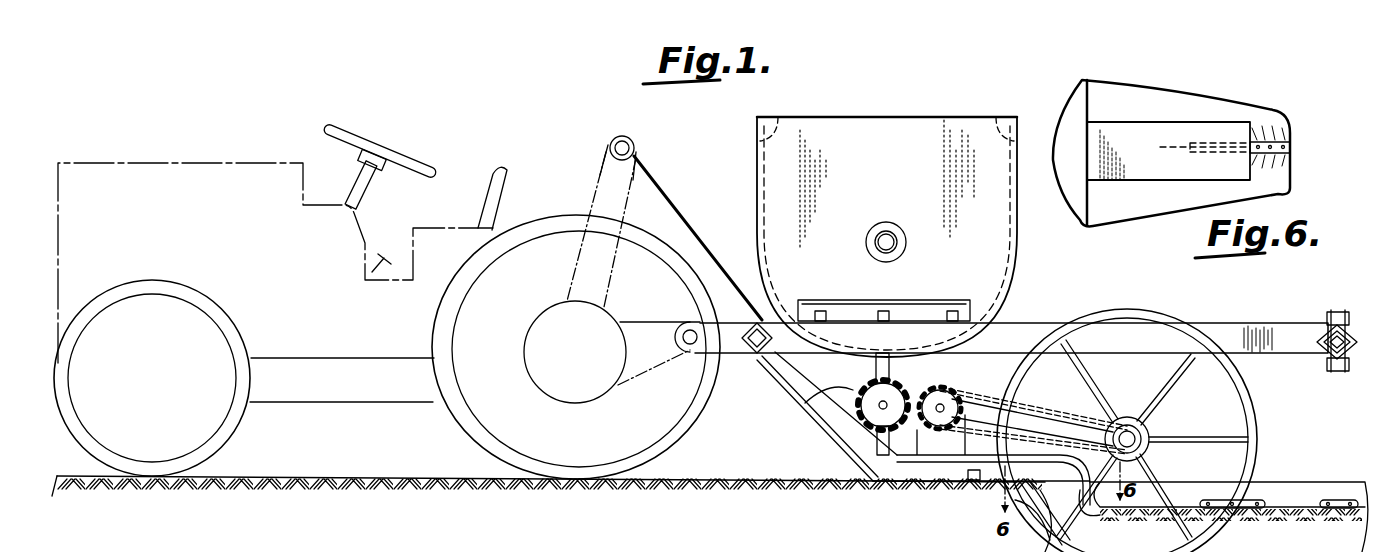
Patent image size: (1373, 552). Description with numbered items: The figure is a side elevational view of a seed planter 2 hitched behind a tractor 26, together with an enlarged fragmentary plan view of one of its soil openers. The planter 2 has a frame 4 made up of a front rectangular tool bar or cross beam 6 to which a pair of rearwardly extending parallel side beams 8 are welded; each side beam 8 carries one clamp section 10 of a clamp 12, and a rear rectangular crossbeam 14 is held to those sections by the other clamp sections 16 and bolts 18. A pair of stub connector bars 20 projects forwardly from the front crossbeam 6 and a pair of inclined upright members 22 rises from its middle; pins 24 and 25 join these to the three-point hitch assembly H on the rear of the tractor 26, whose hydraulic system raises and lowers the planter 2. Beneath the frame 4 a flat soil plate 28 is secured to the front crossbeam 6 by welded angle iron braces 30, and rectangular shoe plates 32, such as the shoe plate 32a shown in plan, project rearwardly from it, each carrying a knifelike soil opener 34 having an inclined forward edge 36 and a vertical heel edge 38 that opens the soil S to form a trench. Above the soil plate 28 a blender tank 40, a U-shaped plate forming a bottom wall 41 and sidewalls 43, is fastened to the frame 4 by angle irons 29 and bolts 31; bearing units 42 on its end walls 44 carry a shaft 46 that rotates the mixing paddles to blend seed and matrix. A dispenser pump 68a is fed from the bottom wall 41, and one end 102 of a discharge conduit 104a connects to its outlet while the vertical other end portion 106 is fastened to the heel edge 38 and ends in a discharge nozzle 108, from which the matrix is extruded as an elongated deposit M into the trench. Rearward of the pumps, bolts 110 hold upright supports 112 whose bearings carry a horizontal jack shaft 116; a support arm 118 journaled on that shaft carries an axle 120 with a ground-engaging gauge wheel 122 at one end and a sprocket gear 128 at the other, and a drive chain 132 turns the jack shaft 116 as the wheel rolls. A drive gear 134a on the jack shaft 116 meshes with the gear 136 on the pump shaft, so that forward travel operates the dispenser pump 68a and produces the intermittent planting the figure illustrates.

In FIG. 1, the seed planter 2 is at (1012, 310).
In FIG. 1, the frame 4 is at (1218, 322).
In FIG. 1, the front rectangular tool bar or cross beam 6 is at (751, 365).
In FIG. 1, the side beams 8 is at (1254, 330).
In FIG. 1, the clamp section 10 is at (1318, 349).
In FIG. 1, the clamp 12 is at (1337, 318).
In FIG. 1, the rear rectangular crossbeam 14 is at (1346, 368).
In FIG. 1, the other clamp sections 16 is at (1349, 325).
In FIG. 1, the bolts 18 is at (1328, 312).
In FIG. 1, the stub connector bars 20 is at (712, 354).
In FIG. 1, the inclined upright members 22 is at (704, 197).
In FIG. 1, the pins 24 is at (683, 337).
In FIG. 1, the pins 25 is at (622, 136).
In FIG. 1, the tractor 26 is at (293, 396).
In FIG. 1, the soil plate 28 is at (878, 485).
In FIG. 1, the angle irons 29 is at (906, 301).
In FIG. 1, the angle iron braces 30 is at (776, 379).
In FIG. 1, the bolts 31 is at (818, 310).
In FIG. 1, the shoe plates 32 is at (1040, 458).
In FIG. 6, the shoe plate 32a is at (1133, 110).
In FIG. 6, the soil opener 34 is at (1194, 146).
In FIG. 1, the inclined forward edge 36 is at (1036, 522).
In FIG. 1, the vertical heel edge 38 is at (1095, 513).
In FIG. 1, the blender tank 40 is at (755, 153).
In FIG. 1, the bottom wall 41 is at (823, 331).
In FIG. 1, the bearing units 42 is at (880, 229).
In FIG. 1, the sidewalls 43 is at (778, 117).
In FIG. 1, the end walls 44 is at (918, 122).
In FIG. 1, the shaft 46 is at (876, 240).
In FIG. 1, the dispenser pump 68a is at (878, 336).
In FIG. 1, the end of discharge conduit 102 is at (852, 459).
In FIG. 1, the discharge conduit 104a is at (964, 486).
In FIG. 1, the other end portion of conduit 106 is at (1139, 451).
In FIG. 6, the other end portion of conduit 106 is at (1255, 136).
In FIG. 1, the discharge nozzle 108 is at (1112, 506).
In FIG. 1, the bolts 110 is at (986, 486).
In FIG. 1, the upright supports 112 is at (928, 486).
In FIG. 1, the jack shaft 116 is at (949, 401).
In FIG. 1, the support arm 118 is at (1046, 411).
In FIG. 1, the axle 120 is at (1146, 435).
In FIG. 1, the gauge wheel 122 is at (1257, 427).
In FIG. 1, the sprocket gear 128 is at (1121, 420).
In FIG. 1, the drive chain 132 is at (1040, 396).
In FIG. 1, the drive gear 134a is at (900, 486).
In FIG. 1, the gear 136 is at (811, 396).
In FIG. 1, the three-point hitch assembly H is at (598, 178).
In FIG. 1, the deposit M is at (1320, 485).
In FIG. 6, the deposit M is at (1292, 145).
In FIG. 1, the soil S is at (691, 478).
In FIG. 6, the soil S is at (1282, 172).